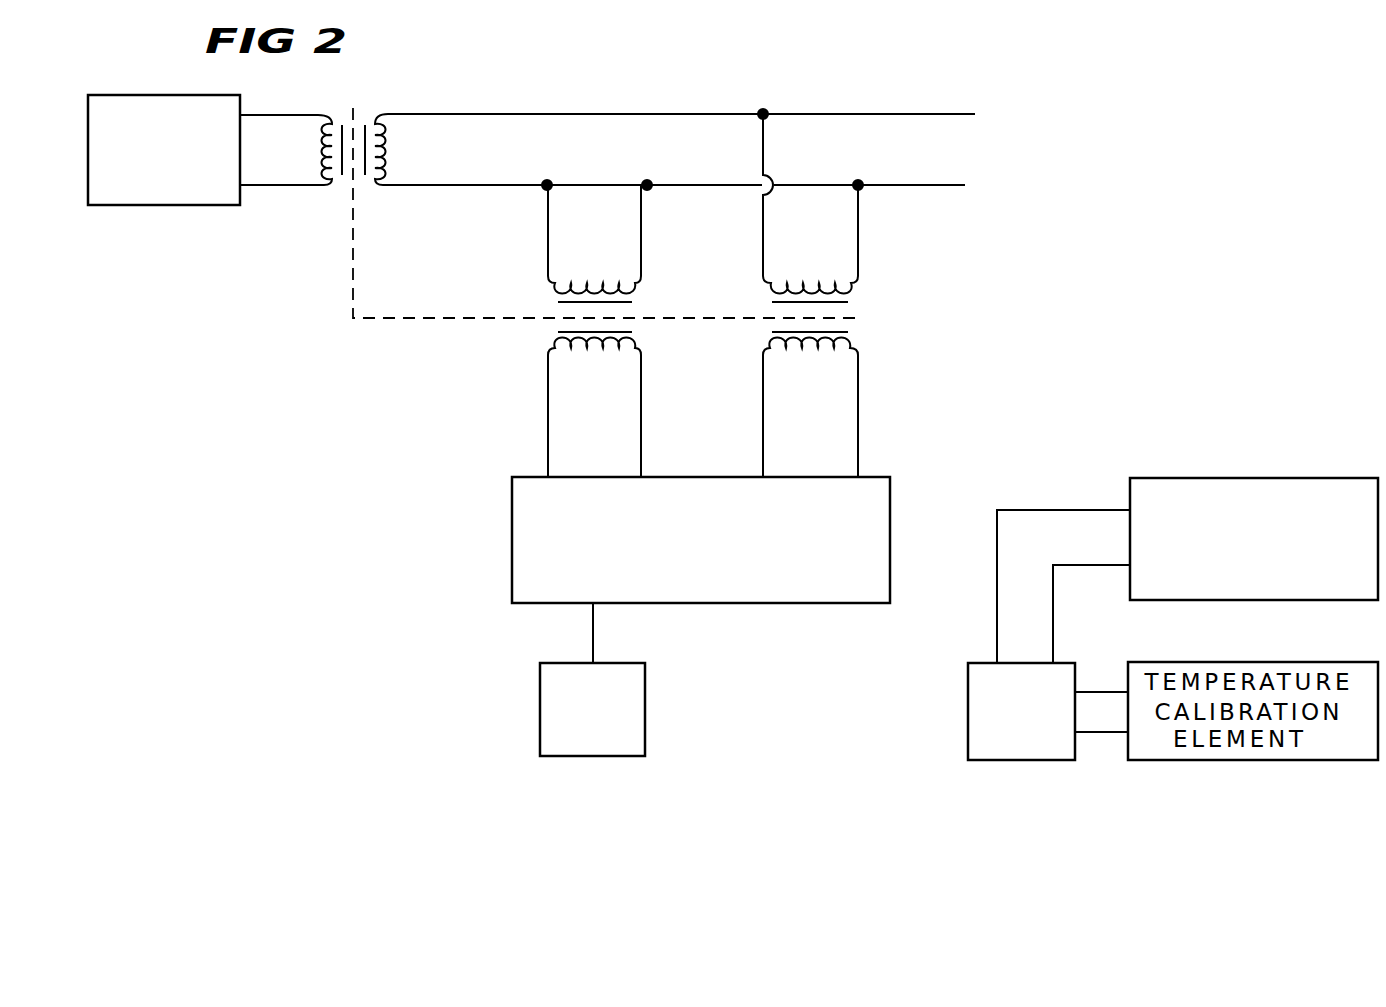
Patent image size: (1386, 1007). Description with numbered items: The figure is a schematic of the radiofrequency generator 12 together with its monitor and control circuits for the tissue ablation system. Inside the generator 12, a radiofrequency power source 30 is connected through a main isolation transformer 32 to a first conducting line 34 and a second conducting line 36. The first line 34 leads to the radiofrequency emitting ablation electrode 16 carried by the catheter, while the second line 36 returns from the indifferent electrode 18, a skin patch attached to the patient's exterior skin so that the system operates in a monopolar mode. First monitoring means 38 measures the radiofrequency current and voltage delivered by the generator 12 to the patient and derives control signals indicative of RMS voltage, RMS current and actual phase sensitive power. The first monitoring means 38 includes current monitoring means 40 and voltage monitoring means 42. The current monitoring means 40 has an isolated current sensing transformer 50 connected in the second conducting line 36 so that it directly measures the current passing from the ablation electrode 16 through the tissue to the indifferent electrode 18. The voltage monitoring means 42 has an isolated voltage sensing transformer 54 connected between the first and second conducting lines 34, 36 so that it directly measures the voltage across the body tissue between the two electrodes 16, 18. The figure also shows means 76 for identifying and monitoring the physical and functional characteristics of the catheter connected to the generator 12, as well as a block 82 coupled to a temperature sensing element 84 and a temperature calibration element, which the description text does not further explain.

The radiofrequency generator 12 is at (745, 92).
The tip electrode 16 is at (1153, 115).
The indifferent second electrode 18 is at (1178, 186).
The radiofrequency power source 30 is at (168, 110).
The main isolation transformer 32 is at (340, 100).
The first conducting line 34 is at (668, 113).
The second conducting line 36 is at (490, 187).
The first monitoring means 38 is at (862, 522).
The current monitoring means 40 is at (581, 331).
The voltage monitoring means 42 is at (863, 331).
The current sensing transformer 50 is at (637, 299).
The voltage sensing transformer 54 is at (870, 305).
The means for identifying and monitoring catheter characteristics 76 is at (562, 698).
The temperature processing unit 82 is at (993, 712).
The temperature sensing element 84 is at (1265, 487).